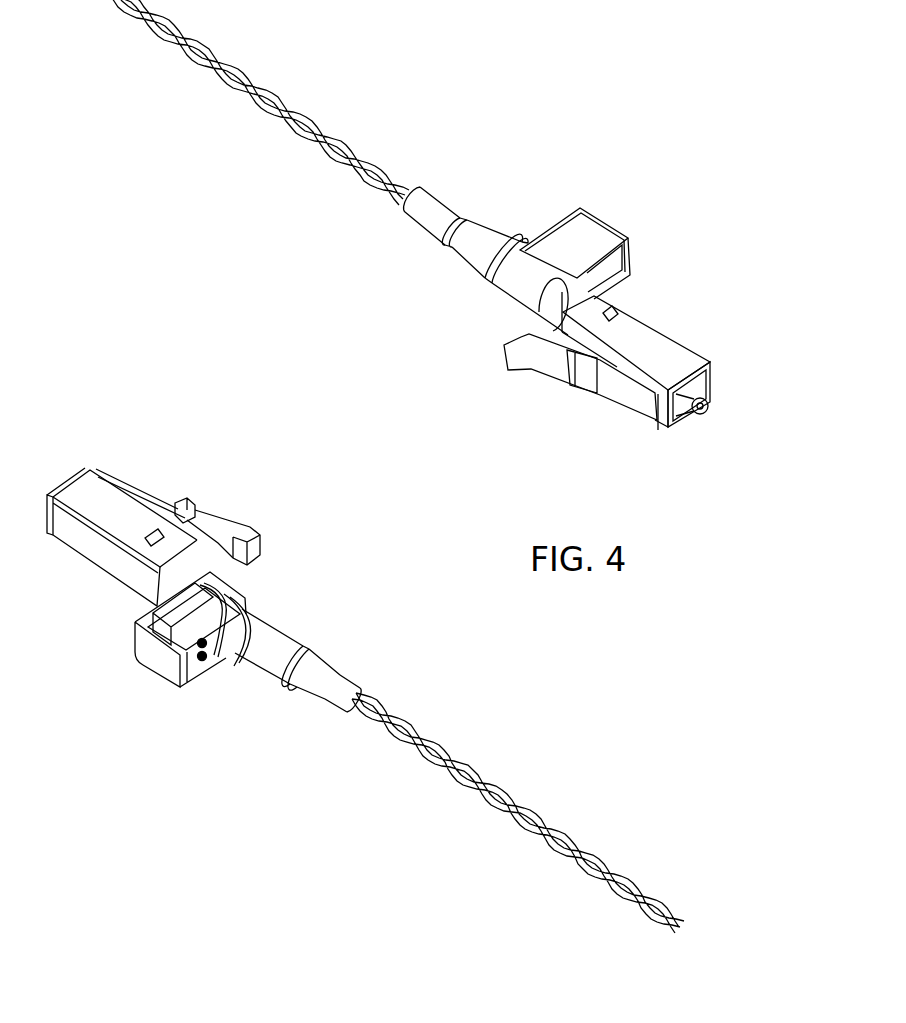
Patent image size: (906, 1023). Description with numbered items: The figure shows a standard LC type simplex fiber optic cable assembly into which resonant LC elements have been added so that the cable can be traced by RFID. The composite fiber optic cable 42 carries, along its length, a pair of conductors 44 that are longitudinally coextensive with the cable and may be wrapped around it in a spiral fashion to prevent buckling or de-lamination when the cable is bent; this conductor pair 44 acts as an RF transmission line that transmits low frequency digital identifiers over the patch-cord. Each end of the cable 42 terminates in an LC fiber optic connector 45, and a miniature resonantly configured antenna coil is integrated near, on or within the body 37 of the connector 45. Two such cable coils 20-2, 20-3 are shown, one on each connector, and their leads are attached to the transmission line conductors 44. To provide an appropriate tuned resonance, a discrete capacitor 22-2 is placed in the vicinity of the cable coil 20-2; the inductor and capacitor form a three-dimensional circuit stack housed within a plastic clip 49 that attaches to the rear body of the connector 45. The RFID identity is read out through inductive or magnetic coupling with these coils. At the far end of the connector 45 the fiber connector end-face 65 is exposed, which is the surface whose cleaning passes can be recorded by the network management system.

The composite fiber optic cable 42 is at (293, 78).
The conductors 44 is at (370, 157).
The connector body 37 is at (522, 277).
The cable coil 20-3 is at (604, 267).
The LC fiber optic connector 45 is at (663, 345).
The fiber connector end-face 65 is at (712, 408).
The plastic clip 49 is at (167, 670).
The cable coil 20-2 is at (185, 617).
The discrete capacitor 22-2 is at (187, 640).